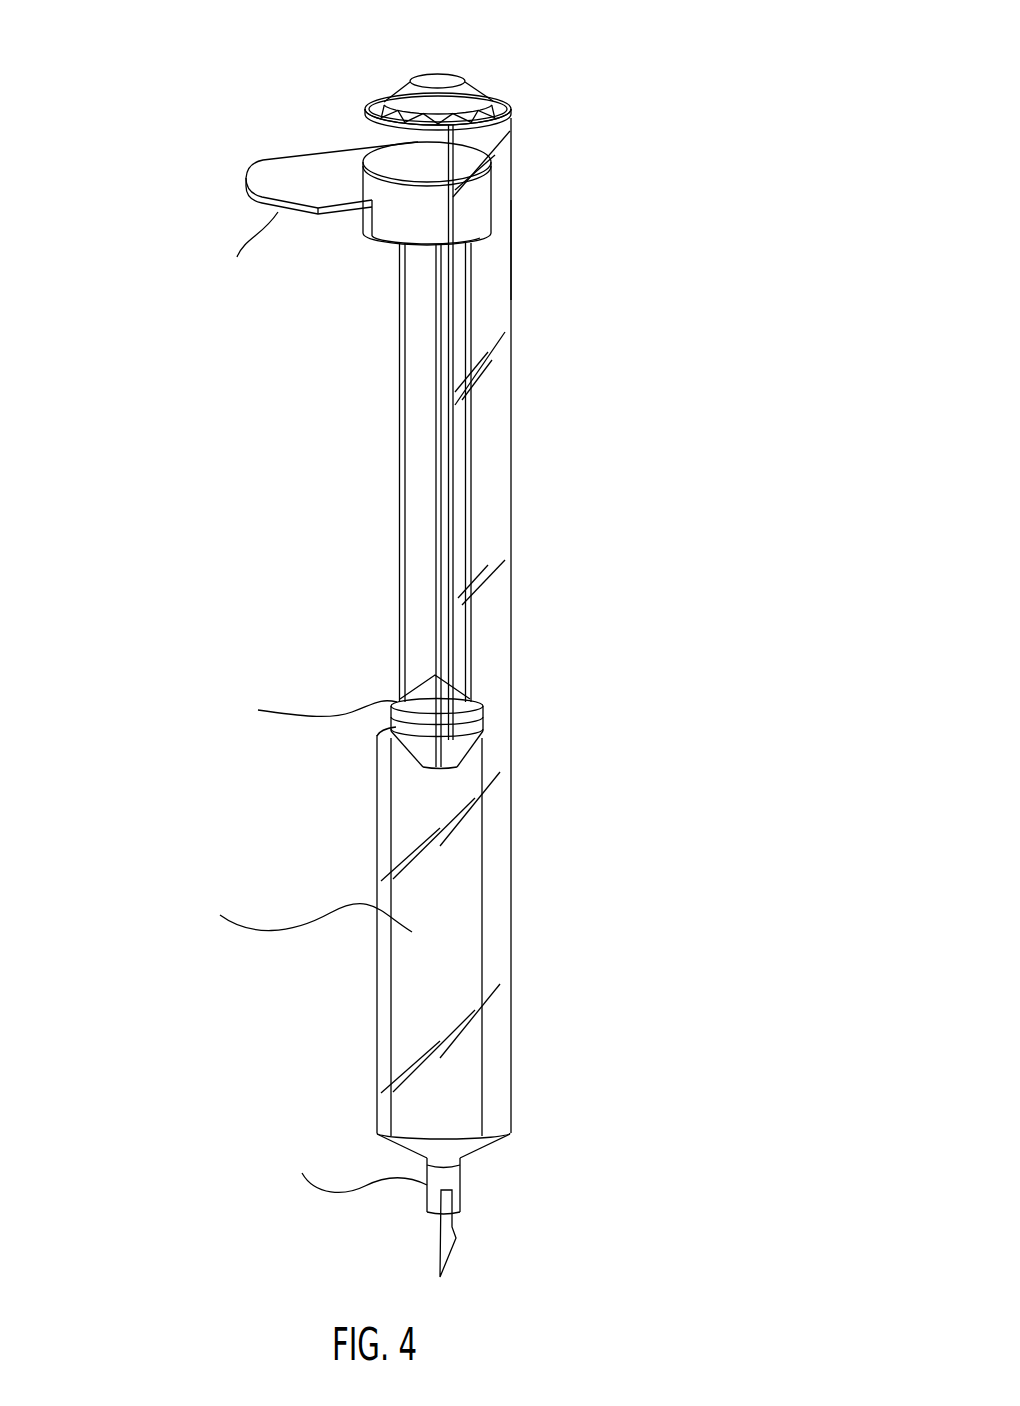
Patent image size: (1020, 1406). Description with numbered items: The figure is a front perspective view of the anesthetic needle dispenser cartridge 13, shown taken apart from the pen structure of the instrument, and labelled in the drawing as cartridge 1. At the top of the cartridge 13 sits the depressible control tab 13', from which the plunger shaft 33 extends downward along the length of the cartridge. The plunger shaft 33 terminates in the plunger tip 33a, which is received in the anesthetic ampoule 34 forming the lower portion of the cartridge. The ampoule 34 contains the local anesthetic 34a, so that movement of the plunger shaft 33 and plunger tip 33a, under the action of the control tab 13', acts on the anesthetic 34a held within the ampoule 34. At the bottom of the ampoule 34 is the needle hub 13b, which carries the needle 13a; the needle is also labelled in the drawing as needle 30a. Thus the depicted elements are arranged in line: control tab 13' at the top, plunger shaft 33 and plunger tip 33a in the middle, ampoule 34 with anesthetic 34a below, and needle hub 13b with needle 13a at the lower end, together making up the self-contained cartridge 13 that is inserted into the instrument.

The cartridge 1 is at (411, 571).
The anesthetic needle dispenser cartridge 13 is at (592, 222).
The control tab 13' is at (317, 190).
The plunger shaft 33 is at (437, 548).
The plunger tip 33a is at (465, 748).
The anesthetic ampoule 34 is at (458, 972).
The anesthetic 34a is at (452, 885).
The needle hub 13b is at (453, 1178).
The needle 13a is at (453, 1237).
The needle 30a is at (440, 1257).